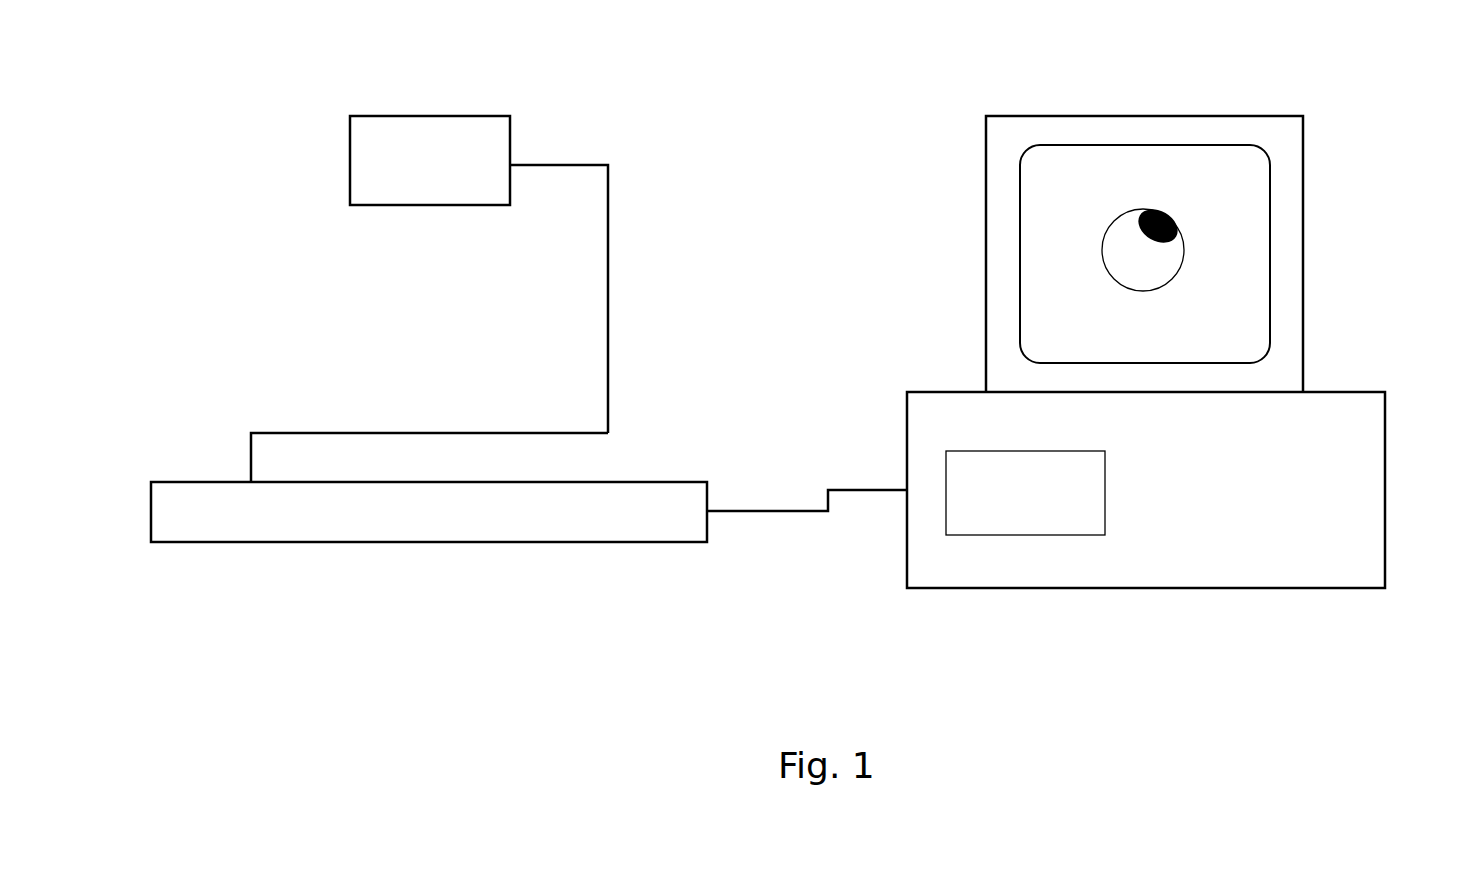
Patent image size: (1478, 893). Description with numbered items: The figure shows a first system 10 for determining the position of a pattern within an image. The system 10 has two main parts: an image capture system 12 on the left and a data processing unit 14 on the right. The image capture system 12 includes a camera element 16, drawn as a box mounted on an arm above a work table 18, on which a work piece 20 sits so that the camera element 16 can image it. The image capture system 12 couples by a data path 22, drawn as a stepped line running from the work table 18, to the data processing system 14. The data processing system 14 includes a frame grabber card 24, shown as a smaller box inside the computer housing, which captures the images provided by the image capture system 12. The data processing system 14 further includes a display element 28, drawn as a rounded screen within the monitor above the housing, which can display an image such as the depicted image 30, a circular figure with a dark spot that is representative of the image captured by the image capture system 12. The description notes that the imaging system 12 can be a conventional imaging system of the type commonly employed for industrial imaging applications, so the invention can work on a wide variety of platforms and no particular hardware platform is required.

The system 10 is at (1349, 73).
The image capture system 12 is at (609, 132).
The data processing unit 14 is at (1324, 184).
The camera element 16 is at (391, 116).
The work table 18 is at (163, 482).
The work piece 20 is at (381, 433).
The data path 22 is at (738, 511).
The frame grabber card 24 is at (1105, 487).
The display element 28 is at (1254, 311).
The image 30 is at (1185, 266).